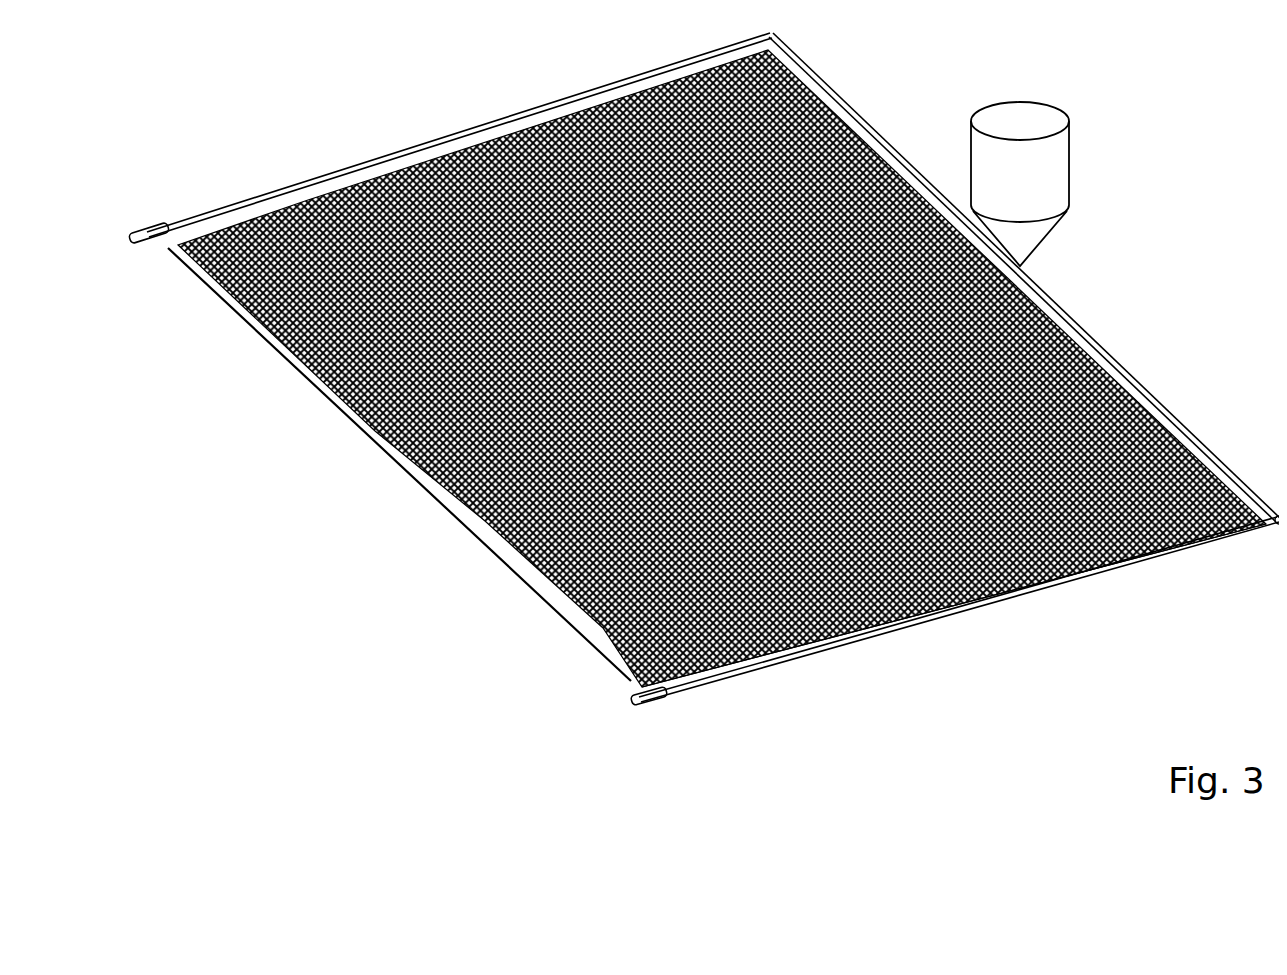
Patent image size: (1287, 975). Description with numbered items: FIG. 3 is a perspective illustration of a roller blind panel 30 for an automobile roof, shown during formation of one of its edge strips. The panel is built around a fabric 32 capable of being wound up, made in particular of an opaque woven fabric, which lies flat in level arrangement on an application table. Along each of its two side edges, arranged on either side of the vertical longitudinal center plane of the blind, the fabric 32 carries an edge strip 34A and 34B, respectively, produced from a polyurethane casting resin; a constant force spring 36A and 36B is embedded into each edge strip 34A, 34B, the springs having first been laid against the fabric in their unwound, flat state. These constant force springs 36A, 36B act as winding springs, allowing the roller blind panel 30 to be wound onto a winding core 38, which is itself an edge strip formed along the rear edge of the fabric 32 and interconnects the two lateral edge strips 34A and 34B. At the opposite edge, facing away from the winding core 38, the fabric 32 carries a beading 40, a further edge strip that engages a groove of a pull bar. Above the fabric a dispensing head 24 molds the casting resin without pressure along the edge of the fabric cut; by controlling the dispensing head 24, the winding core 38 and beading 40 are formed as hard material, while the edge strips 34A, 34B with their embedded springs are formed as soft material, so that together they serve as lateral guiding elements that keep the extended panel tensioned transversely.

The dispensing head 24 is at (1043, 157).
The roller blind panel 30 is at (731, 681).
The fabric 32 is at (455, 452).
The edge strip 34A is at (870, 630).
The edge strip 34B is at (293, 178).
The constant force spring 36A is at (637, 696).
The constant force spring 36B is at (140, 217).
The winding core 38 is at (1100, 360).
The beading 40 is at (310, 383).